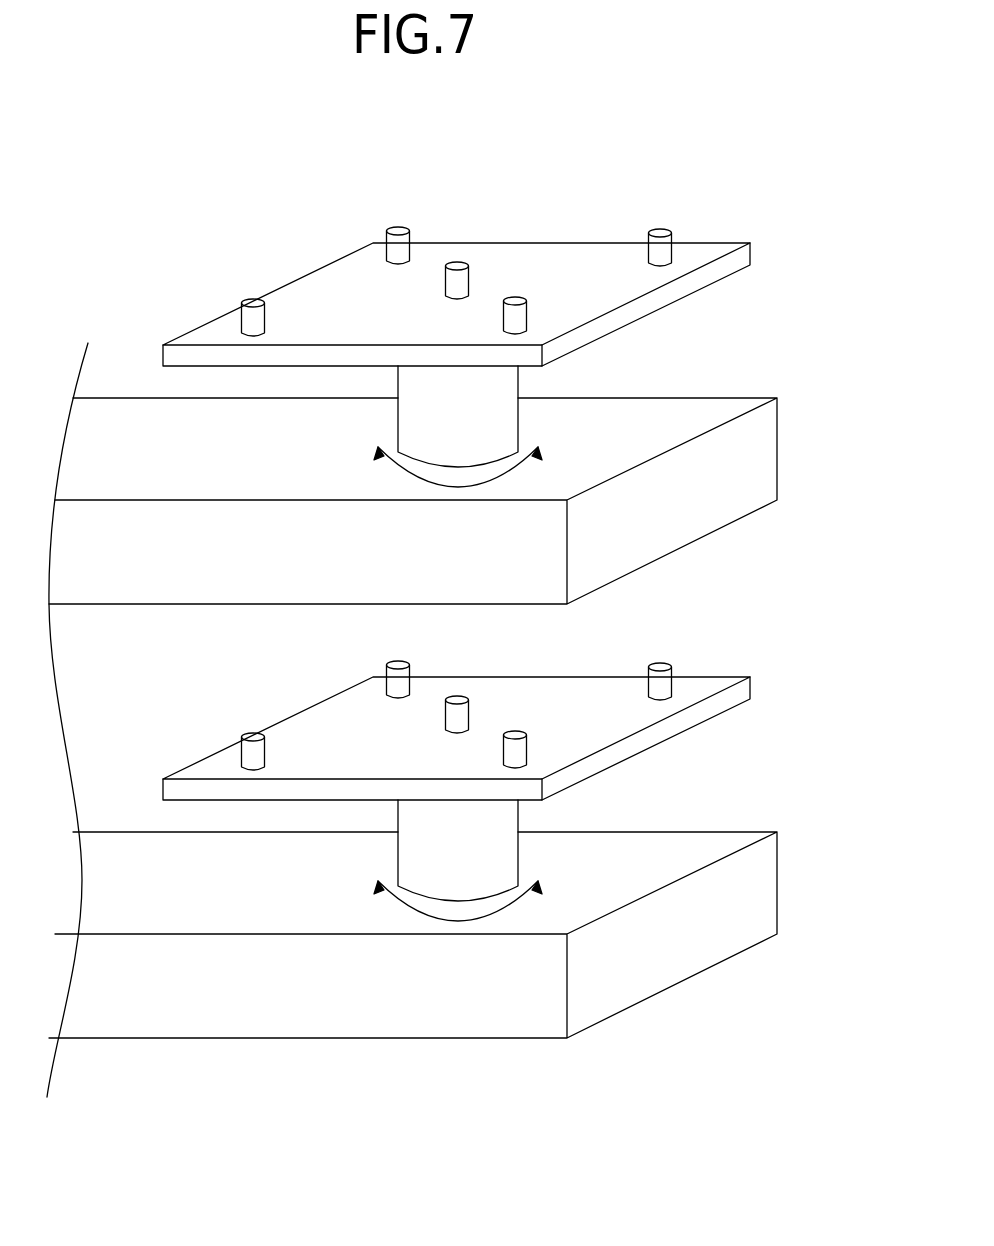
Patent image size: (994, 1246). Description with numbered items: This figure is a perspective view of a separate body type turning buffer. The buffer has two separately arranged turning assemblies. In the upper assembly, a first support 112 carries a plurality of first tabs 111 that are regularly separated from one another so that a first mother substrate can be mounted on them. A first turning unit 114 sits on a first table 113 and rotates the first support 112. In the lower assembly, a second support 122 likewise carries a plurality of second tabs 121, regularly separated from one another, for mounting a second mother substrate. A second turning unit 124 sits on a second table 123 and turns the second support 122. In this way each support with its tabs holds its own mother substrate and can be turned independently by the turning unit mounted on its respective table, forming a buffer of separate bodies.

The first tabs 111 is at (400, 230).
The first support 112 is at (657, 300).
The first table 113 is at (758, 443).
The first turning unit 114 is at (505, 417).
The second tabs 121 is at (662, 667).
The second support 122 is at (660, 733).
The second table 123 is at (760, 877).
The second turning unit 124 is at (507, 852).